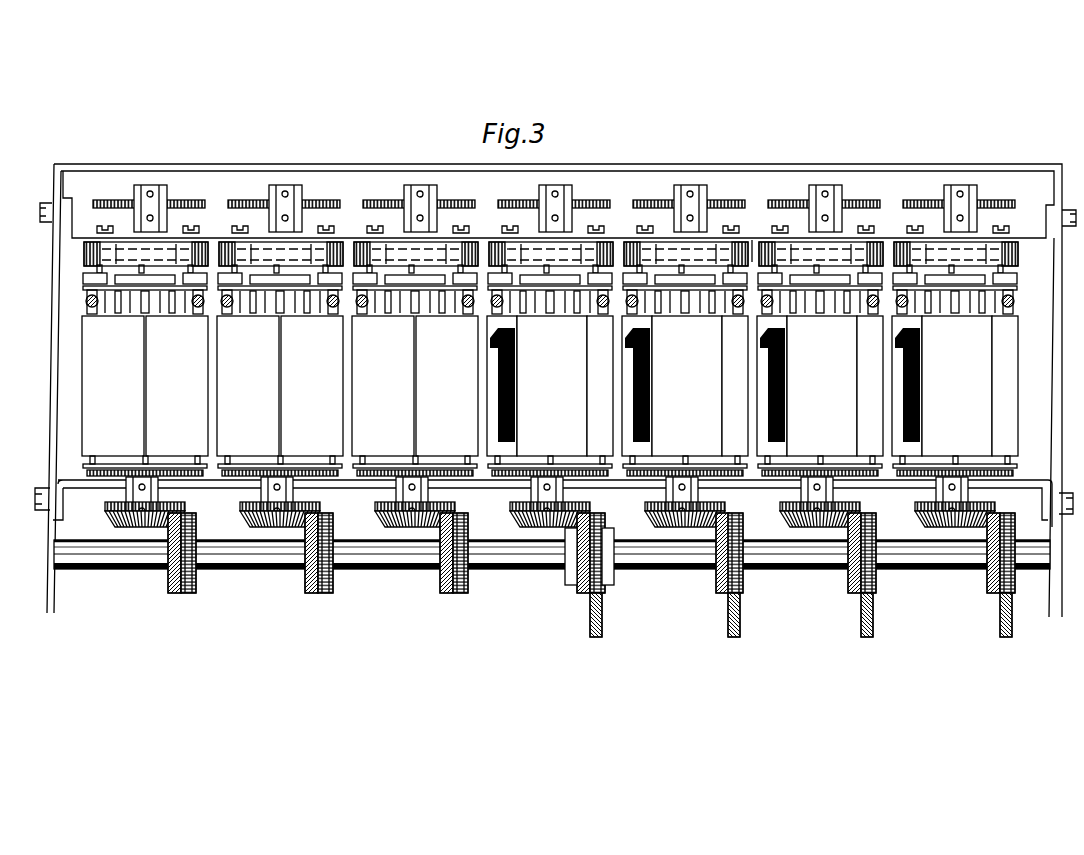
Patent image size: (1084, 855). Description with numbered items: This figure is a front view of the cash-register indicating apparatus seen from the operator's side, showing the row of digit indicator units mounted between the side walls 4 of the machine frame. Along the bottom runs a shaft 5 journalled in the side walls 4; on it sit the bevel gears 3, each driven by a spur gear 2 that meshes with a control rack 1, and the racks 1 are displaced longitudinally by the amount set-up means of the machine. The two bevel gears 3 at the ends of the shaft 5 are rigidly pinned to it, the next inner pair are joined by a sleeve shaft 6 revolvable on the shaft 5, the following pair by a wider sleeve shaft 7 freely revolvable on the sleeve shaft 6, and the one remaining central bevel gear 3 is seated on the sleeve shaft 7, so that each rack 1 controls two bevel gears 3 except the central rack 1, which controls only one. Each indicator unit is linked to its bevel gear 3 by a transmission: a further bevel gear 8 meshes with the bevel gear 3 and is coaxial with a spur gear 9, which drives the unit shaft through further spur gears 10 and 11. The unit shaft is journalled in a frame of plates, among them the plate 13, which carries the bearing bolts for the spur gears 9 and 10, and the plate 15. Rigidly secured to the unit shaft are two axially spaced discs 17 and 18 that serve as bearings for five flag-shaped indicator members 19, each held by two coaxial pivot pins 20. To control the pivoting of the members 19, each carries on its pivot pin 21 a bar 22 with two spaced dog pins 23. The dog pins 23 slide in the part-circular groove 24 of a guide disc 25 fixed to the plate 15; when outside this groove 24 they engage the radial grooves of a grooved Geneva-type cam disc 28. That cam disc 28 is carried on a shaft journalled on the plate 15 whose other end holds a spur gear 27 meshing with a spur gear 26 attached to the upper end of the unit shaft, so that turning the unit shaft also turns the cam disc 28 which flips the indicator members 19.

The control rack 1 is at (603, 622).
The spur gear 2 is at (603, 521).
The bevel gear 3 is at (176, 592).
The side wall 4 is at (48, 592).
The shaft 5 is at (152, 568).
The sleeve shaft 6 is at (386, 570).
The sleeve shaft 7 is at (528, 570).
The bevel gear 8 is at (113, 523).
The spur gear 9 is at (107, 506).
The spur gear 10 is at (726, 508).
The spur gear 11 is at (727, 508).
The plate 13 is at (903, 485).
The plate 15 is at (753, 243).
The disc 17 is at (345, 466).
The disc 18 is at (92, 287).
The indicator member 19 is at (92, 378).
The pivot pin 20 is at (240, 464).
The pivot pin 21 is at (103, 313).
The bar 22 is at (93, 281).
The dog pin 23 is at (1017, 281).
The part-circular groove 24 is at (912, 262).
The guide disc 25 is at (214, 253).
The spur gear 26 is at (592, 205).
The spur gear 27 is at (645, 205).
The cam disc 28 is at (400, 250).